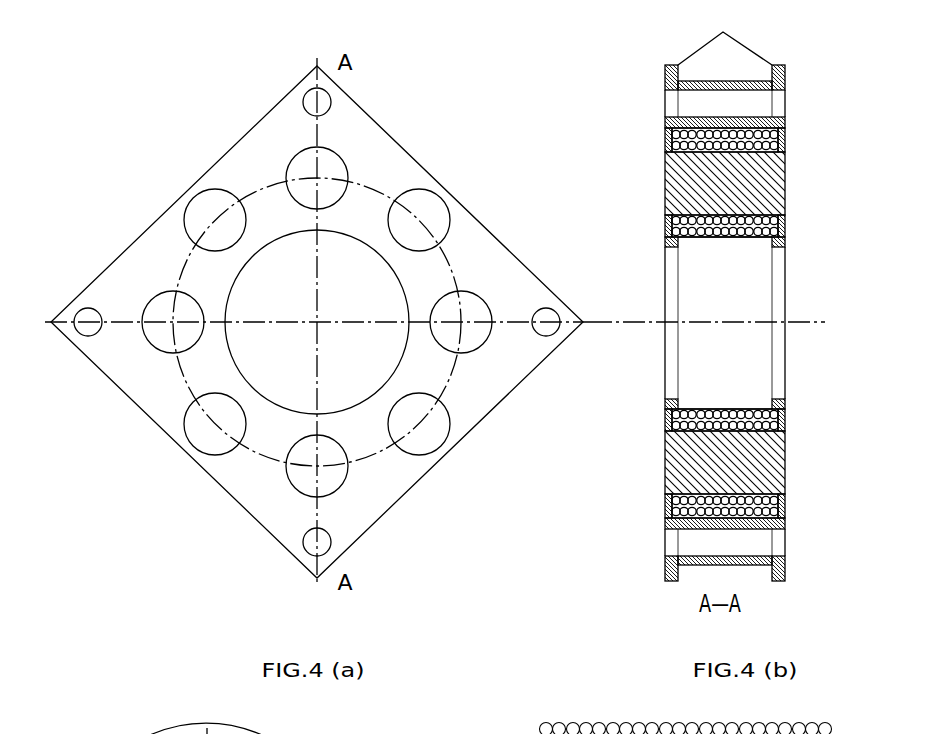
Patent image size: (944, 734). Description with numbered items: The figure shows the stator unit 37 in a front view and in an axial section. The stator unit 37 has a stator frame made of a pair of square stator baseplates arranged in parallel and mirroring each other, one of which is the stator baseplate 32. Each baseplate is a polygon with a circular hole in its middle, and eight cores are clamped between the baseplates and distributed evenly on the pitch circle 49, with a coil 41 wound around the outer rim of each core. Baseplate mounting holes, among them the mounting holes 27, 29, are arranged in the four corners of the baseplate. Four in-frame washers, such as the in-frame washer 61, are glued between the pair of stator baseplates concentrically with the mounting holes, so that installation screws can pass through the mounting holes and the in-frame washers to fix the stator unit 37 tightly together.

The baseplate mounting hole 27 is at (547, 330).
The baseplate mounting hole 29 is at (87, 327).
The stator baseplate 32 is at (667, 142).
The stator unit 37 is at (725, 33).
The coil 41 is at (708, 233).
The pitch circle 49 is at (178, 270).
The in-frame washer 61 is at (700, 558).